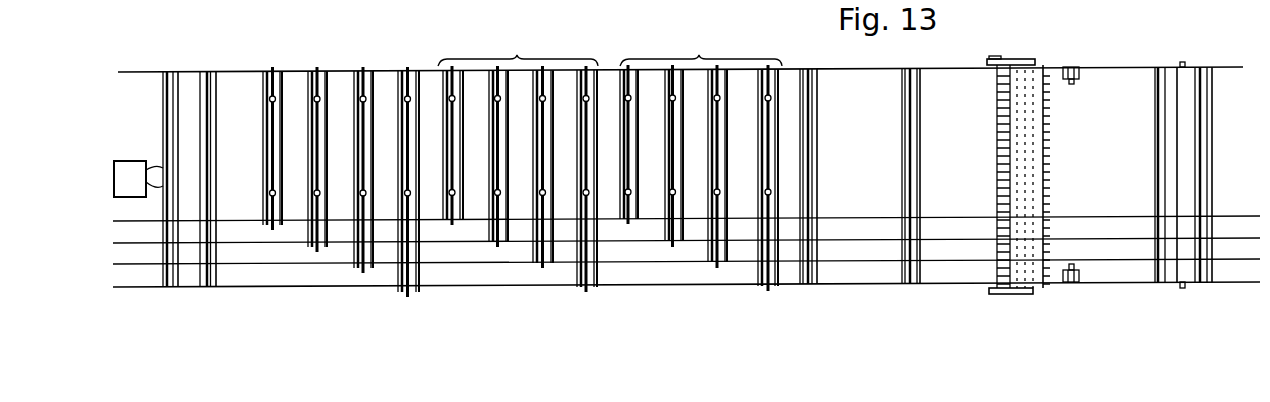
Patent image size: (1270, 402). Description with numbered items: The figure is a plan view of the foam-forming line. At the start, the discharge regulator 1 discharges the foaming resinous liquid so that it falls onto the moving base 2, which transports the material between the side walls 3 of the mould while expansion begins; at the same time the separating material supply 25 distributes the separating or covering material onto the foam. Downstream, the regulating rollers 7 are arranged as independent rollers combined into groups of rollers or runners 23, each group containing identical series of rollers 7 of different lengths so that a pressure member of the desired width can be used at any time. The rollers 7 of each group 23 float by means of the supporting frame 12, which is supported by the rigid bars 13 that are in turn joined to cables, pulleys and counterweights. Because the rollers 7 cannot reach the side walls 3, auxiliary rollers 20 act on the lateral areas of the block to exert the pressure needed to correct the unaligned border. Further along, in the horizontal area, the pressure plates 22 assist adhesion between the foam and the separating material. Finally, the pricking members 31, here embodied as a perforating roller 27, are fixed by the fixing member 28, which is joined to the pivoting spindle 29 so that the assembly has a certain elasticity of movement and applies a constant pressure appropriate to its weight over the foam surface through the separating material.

The discharge regulator 1 is at (129, 172).
The moving base 2 is at (141, 88).
The side walls 3 is at (232, 71).
The regulating rollers 7 is at (356, 248).
The supporting frame 12 is at (408, 83).
The rigid bars 13 is at (319, 190).
The auxiliary rollers 20 is at (1071, 67).
The pressure plates 22 is at (955, 200).
The groups of rollers or runners 23 is at (610, 47).
The separating material supply 25 is at (194, 92).
The perforating roller 27 is at (1033, 270).
The fixing member 28 is at (1010, 59).
The pivoting spindle 29 is at (992, 57).
The pricking members 31 is at (1047, 117).